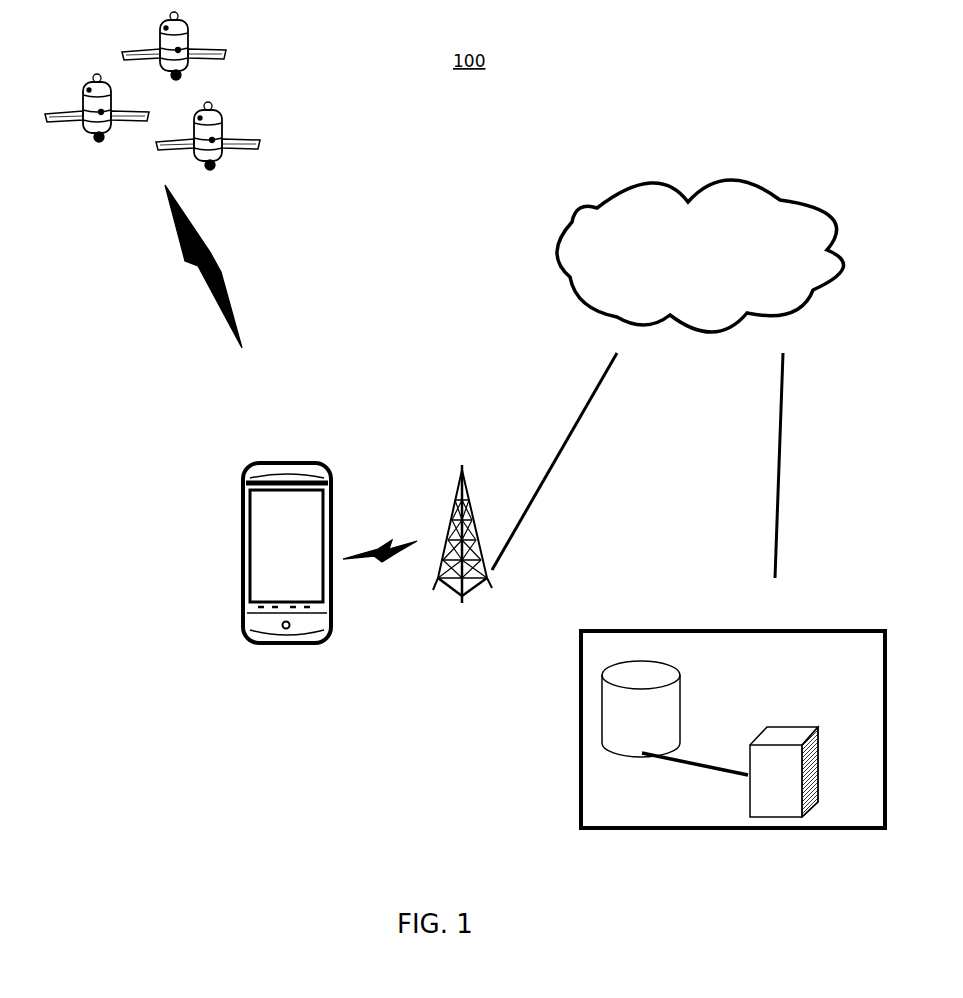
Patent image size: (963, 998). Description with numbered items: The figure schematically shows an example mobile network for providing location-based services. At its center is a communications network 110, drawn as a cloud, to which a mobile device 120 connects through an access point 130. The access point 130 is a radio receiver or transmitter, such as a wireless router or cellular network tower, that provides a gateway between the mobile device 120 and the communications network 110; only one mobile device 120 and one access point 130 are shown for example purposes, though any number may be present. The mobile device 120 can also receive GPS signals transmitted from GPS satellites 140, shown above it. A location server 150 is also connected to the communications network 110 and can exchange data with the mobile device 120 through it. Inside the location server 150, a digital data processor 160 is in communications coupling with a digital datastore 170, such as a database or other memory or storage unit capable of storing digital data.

The communications network 110 is at (700, 256).
The mobile device 120 is at (268, 557).
The access point 130 is at (455, 623).
The GPS satellites 140 is at (92, 198).
The location server 150 is at (733, 729).
The digital data processor 160 is at (784, 772).
The digital datastore 170 is at (641, 709).